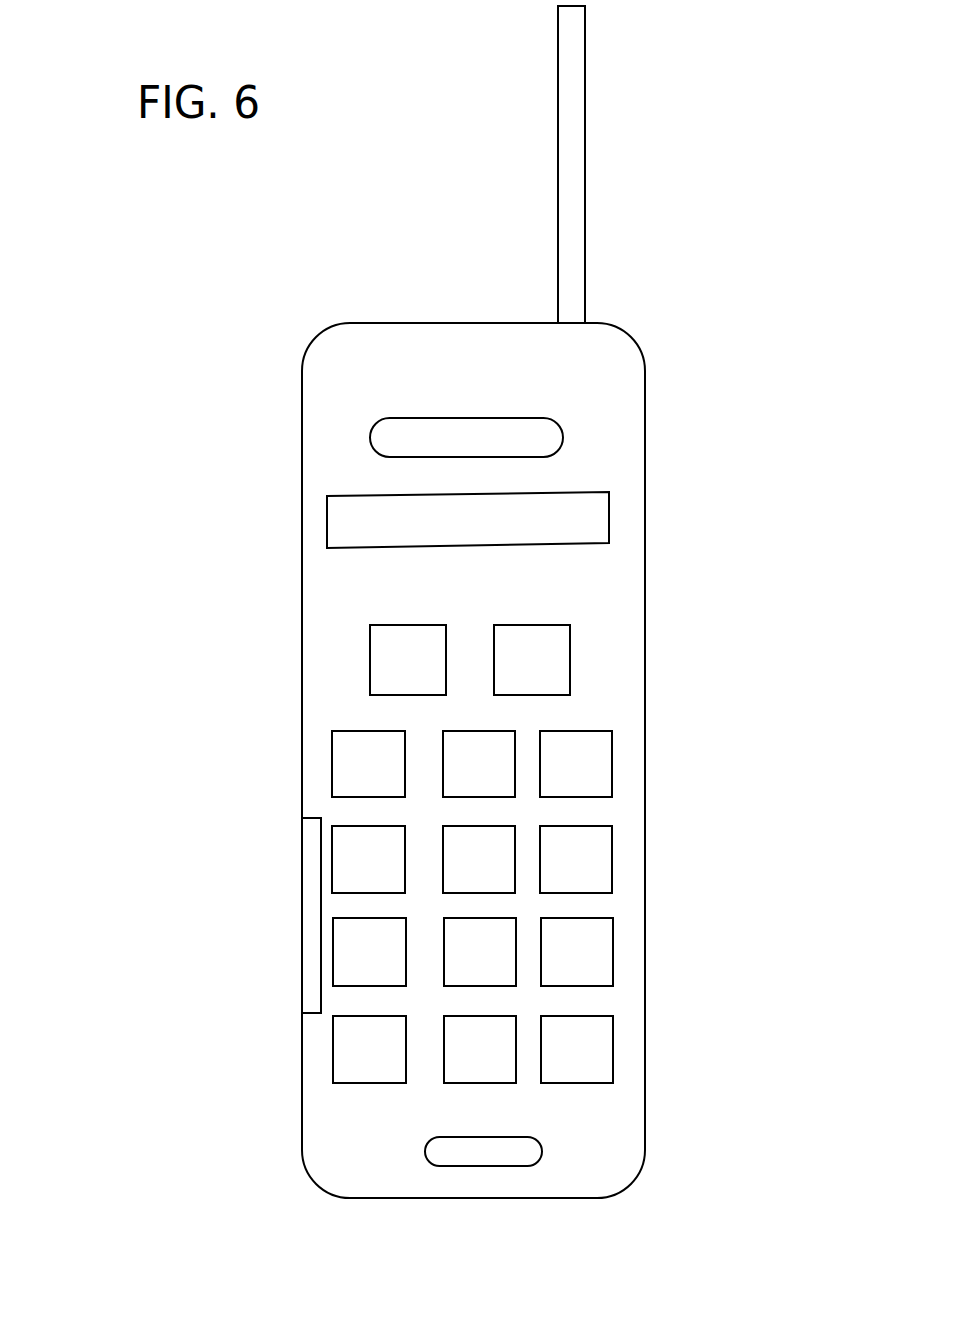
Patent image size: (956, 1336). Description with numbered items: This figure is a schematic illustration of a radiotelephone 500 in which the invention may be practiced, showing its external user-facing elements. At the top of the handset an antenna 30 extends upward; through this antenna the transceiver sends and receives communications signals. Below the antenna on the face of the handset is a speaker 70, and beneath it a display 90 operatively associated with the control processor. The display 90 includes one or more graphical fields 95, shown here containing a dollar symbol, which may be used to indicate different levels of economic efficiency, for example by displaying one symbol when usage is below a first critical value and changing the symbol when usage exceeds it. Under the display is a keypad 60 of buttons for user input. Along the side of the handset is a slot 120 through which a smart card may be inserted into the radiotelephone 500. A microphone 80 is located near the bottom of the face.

The radiotelephone 500 is at (222, 1077).
The antenna 30 is at (585, 92).
The speaker 70 is at (565, 430).
The display 90 is at (610, 500).
The graphical field 95 is at (346, 521).
The keypad 60 is at (549, 847).
The slot 120 is at (312, 918).
The microphone 80 is at (528, 1163).